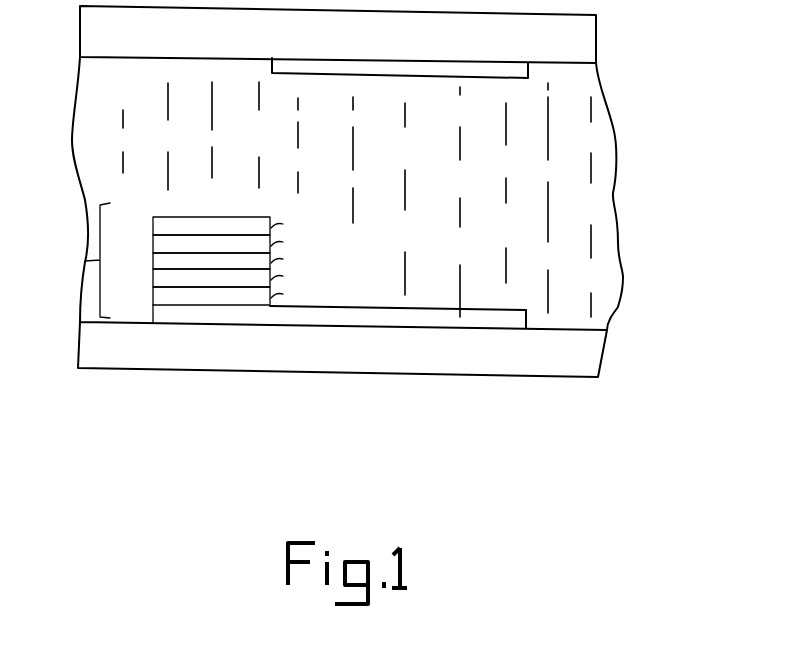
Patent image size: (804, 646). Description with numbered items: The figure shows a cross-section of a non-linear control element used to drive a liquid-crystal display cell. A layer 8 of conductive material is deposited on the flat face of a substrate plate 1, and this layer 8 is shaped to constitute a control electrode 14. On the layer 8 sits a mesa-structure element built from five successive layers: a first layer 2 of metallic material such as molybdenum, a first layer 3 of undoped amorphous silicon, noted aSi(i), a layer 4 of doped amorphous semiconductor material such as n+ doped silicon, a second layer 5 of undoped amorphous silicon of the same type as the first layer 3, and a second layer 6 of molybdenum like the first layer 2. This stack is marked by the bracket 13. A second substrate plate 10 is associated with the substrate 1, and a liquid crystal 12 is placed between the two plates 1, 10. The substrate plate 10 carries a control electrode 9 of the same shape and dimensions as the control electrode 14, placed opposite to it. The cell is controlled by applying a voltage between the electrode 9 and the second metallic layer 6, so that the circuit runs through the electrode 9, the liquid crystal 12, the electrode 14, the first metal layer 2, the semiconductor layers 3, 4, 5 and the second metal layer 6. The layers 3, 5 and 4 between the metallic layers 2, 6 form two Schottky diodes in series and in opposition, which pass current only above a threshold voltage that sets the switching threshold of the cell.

The substrate plate 1 is at (88, 344).
The first layer of metallic material 2 is at (152, 296).
The first layer of undoped amorphous semiconductor material 3 is at (152, 277).
The layer of doped amorphous semiconductor material 4 is at (152, 262).
The second layer of undoped amorphous semiconductor material 5 is at (152, 242).
The second layer of metallic material 6 is at (152, 222).
The layer of conductive material 8 is at (422, 317).
The control electrode 9 is at (516, 74).
The second substrate plate 10 is at (585, 37).
The liquid crystal 12 is at (604, 212).
The thin film element stack 13 is at (84, 263).
The control electrode 14 is at (487, 323).